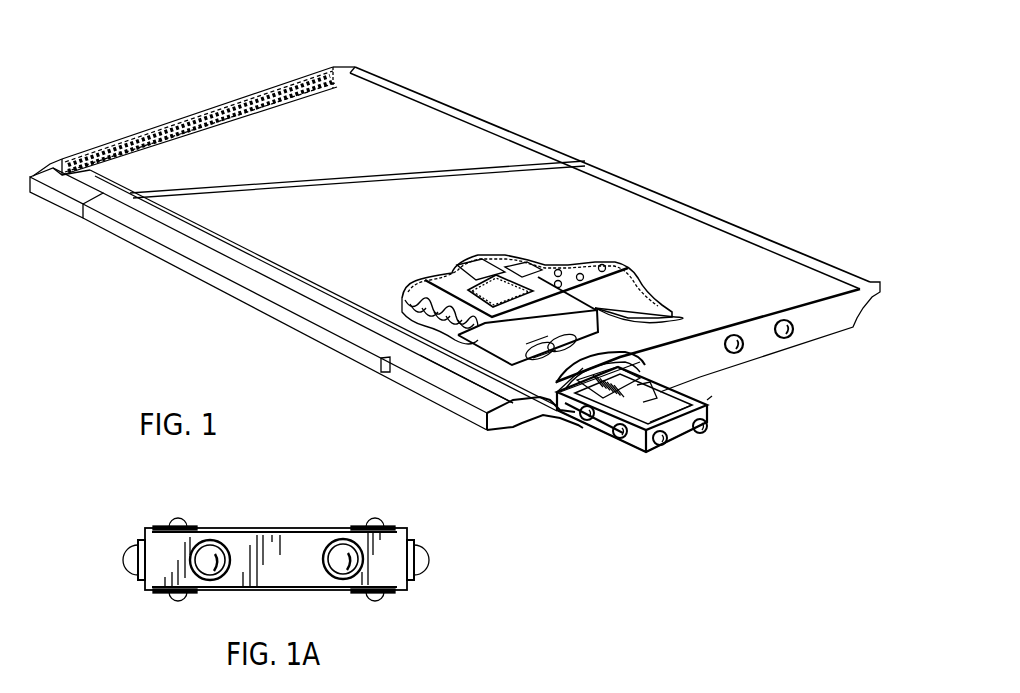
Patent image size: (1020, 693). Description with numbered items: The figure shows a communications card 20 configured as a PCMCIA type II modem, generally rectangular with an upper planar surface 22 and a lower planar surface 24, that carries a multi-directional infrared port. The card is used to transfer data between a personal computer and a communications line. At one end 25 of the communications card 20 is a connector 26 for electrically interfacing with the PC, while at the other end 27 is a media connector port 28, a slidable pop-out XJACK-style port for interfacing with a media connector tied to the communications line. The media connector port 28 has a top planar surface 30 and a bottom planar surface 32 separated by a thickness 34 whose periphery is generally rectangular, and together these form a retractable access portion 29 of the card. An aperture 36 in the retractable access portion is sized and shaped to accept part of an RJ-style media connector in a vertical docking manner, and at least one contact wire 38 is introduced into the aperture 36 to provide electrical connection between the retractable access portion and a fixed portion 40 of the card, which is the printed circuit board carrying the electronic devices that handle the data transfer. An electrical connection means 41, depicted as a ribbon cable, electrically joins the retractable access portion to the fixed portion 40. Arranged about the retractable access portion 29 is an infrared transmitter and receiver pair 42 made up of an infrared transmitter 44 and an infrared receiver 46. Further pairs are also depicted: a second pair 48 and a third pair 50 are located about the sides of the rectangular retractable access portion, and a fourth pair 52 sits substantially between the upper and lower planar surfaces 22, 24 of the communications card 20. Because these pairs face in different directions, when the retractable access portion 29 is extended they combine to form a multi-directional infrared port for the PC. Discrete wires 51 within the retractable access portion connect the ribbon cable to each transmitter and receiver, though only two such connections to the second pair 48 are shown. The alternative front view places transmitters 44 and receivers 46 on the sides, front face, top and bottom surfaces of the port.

In FIG. 1, the communications card 20 is at (655, 111).
In FIG. 1, the upper planar surface 22 is at (737, 260).
In FIG. 1, the lower planar surface 24 is at (273, 328).
In FIG. 1, the one end 25 is at (355, 66).
In FIG. 1, the connector 26 is at (200, 111).
In FIG. 1, the other end 27 is at (862, 279).
In FIG. 1, the media connector port 28 is at (637, 444).
In FIG. 1, the retractable access portion 29 is at (637, 447).
In FIG. 1A, the retractable access portion 29 is at (283, 554).
In FIG. 1, the top planar surface 30 is at (655, 368).
In FIG. 1, the bottom planar surface 32 is at (523, 429).
In FIG. 1, the thickness 34 is at (708, 416).
In FIG. 1, the aperture 36 is at (669, 378).
In FIG. 1, the contact wire 38 is at (436, 393).
In FIG. 1, the fixed portion 40 is at (495, 268).
In FIG. 1, the electrical connection means 41 is at (552, 333).
In FIG. 1, the infrared transmitter and receiver pair 42 is at (669, 463).
In FIG. 1, the infrared transmitter 44 is at (794, 327).
In FIG. 1A, the infrared transmitter 44 is at (338, 547).
In FIG. 1, the infrared receiver 46 is at (738, 337).
In FIG. 1A, the infrared receiver 46 is at (178, 520).
In FIG. 1, the second pair 48 is at (581, 482).
In FIG. 1, the third pair 50 is at (698, 396).
In FIG. 1, the discrete wires 51 is at (551, 348).
In FIG. 1, the fourth pair 52 is at (733, 358).